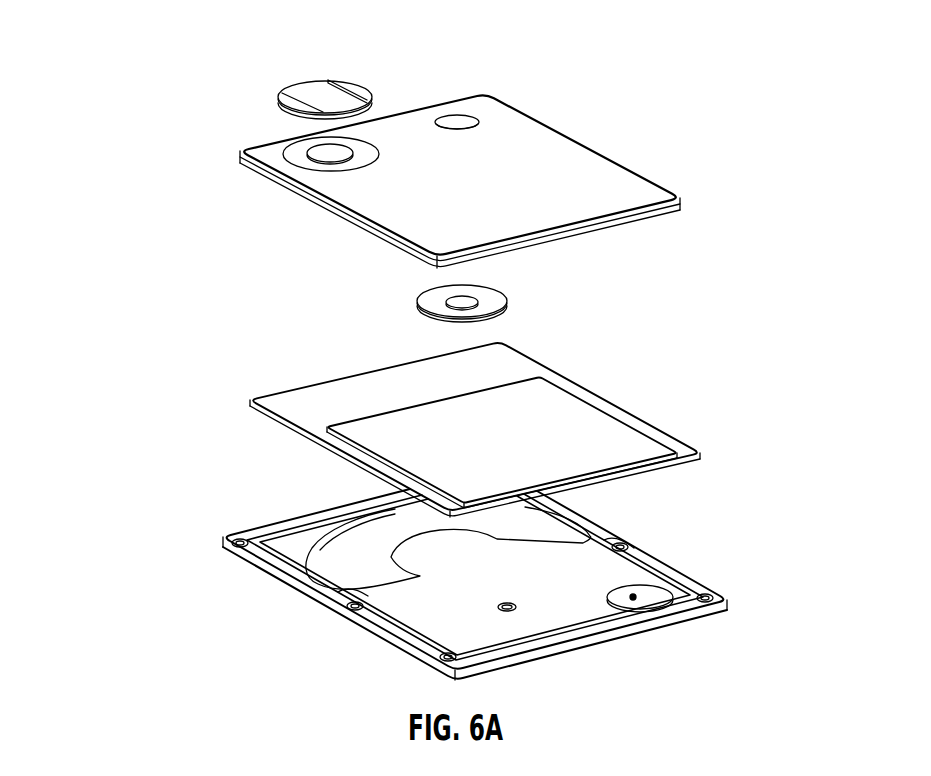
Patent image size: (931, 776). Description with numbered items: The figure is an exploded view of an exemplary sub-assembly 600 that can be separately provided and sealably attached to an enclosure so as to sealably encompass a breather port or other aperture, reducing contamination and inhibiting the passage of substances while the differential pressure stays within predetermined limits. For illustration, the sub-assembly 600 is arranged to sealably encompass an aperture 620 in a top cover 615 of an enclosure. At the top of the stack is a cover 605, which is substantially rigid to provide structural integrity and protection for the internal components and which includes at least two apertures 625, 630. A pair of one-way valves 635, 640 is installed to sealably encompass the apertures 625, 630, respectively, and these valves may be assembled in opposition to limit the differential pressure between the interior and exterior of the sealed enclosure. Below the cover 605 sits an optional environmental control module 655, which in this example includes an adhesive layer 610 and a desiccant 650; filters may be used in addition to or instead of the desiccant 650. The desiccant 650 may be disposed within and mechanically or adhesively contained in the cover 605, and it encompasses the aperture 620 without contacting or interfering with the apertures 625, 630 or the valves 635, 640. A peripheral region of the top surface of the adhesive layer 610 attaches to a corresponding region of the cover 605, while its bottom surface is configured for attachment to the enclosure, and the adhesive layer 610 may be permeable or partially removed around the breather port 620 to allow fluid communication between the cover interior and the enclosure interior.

The sub-assembly 600 is at (212, 48).
The cover 605 is at (668, 192).
The adhesive layer 610 is at (513, 355).
The top cover 615 is at (720, 590).
The aperture 620 is at (633, 597).
The aperture 625 is at (327, 153).
The aperture 630 is at (458, 125).
The one-way valve 635 is at (354, 84).
The one-way valve 640 is at (505, 295).
The desiccant 650 is at (595, 417).
The environmental control module 655 is at (300, 416).